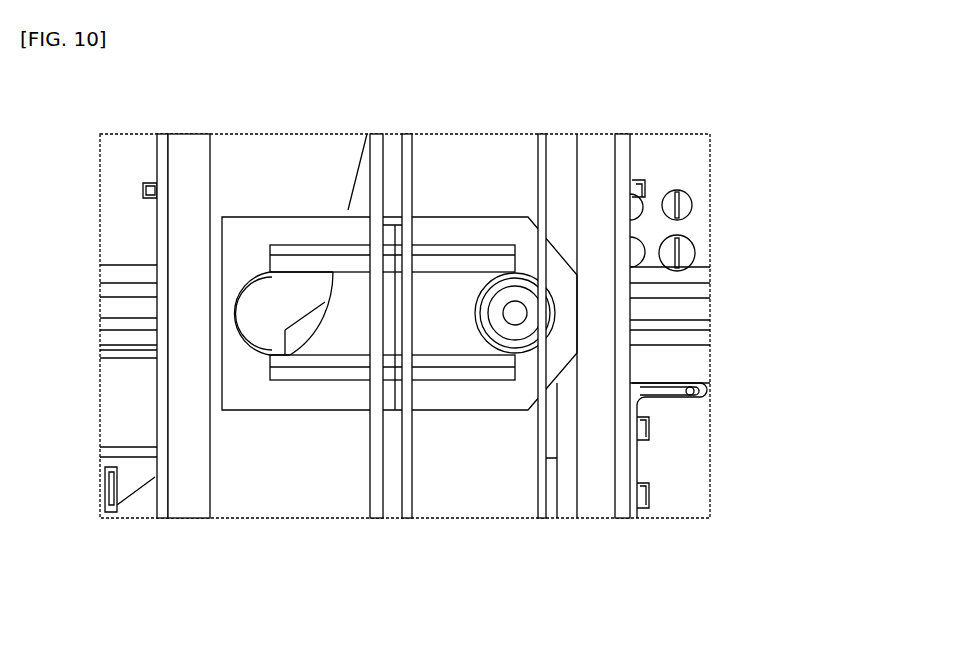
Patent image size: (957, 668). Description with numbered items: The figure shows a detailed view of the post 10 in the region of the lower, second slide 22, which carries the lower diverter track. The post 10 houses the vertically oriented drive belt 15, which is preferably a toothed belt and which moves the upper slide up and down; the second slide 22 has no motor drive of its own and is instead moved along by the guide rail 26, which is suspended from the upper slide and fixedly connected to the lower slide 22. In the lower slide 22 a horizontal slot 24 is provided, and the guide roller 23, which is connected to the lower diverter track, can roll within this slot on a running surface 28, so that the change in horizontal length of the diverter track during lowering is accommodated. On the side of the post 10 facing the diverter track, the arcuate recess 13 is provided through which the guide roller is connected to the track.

The post 10 is at (212, 465).
The arcuate recess 13 is at (290, 185).
The drive belt 15 is at (560, 208).
The second slide 22 is at (685, 395).
The guide roller 23 is at (527, 330).
The horizontal slot 24 is at (455, 333).
The guide rail 26 is at (378, 200).
The running surface 28 is at (362, 368).